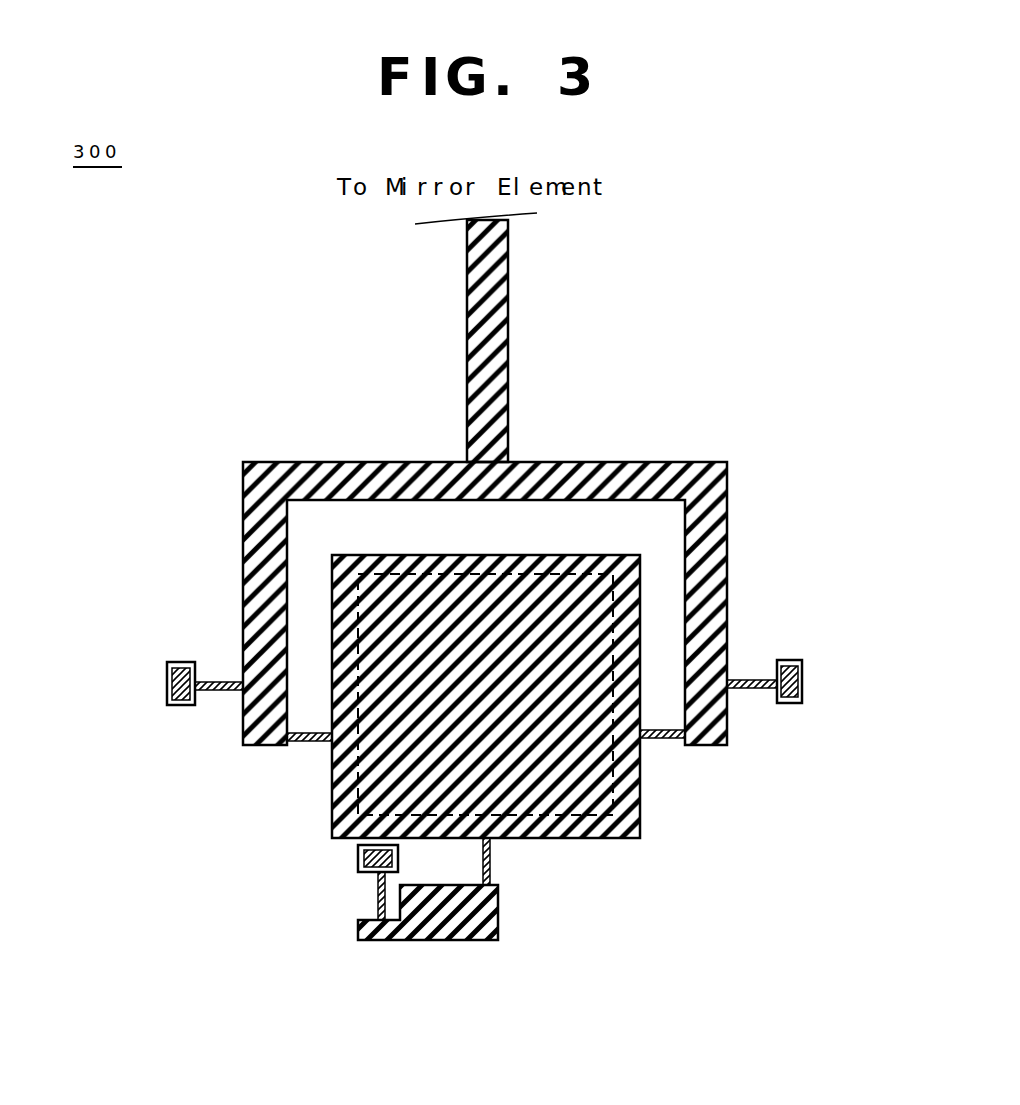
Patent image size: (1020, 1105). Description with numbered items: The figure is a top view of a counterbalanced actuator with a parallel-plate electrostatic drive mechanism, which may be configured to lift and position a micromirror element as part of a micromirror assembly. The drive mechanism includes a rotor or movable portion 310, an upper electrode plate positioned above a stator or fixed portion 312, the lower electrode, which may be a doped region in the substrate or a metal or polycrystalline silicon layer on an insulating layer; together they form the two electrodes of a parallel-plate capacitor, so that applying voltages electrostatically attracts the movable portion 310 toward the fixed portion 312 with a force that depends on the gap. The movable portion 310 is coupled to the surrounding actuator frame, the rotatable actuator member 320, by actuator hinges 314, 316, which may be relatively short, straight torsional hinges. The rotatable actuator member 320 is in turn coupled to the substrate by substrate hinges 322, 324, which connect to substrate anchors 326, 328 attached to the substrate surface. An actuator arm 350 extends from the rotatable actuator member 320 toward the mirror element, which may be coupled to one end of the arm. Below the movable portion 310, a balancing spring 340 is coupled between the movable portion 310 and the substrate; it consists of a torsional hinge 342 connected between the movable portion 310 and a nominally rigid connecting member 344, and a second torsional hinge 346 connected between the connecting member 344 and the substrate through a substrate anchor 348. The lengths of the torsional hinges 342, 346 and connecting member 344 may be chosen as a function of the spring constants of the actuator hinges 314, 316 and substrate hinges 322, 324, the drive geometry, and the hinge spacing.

The movable portion 310 is at (640, 780).
The fixed portion 312 is at (600, 815).
The actuator hinge 314 is at (648, 745).
The actuator hinge 316 is at (320, 745).
The rotatable actuator member 320 is at (706, 462).
The substrate hinge 322 is at (750, 680).
The substrate hinge 324 is at (222, 680).
The substrate anchor 326 is at (803, 678).
The substrate anchor 328 is at (167, 684).
The balancing spring 340 is at (416, 941).
The torsional hinge 342 is at (490, 865).
The nominally rigid connecting member 344 is at (445, 940).
The torsional hinge 346 is at (378, 893).
The substrate anchor 348 is at (358, 862).
The actuator arm 350 is at (508, 318).